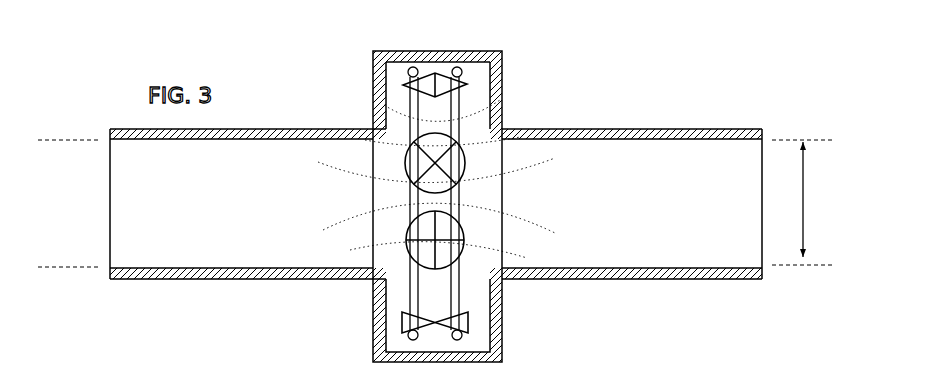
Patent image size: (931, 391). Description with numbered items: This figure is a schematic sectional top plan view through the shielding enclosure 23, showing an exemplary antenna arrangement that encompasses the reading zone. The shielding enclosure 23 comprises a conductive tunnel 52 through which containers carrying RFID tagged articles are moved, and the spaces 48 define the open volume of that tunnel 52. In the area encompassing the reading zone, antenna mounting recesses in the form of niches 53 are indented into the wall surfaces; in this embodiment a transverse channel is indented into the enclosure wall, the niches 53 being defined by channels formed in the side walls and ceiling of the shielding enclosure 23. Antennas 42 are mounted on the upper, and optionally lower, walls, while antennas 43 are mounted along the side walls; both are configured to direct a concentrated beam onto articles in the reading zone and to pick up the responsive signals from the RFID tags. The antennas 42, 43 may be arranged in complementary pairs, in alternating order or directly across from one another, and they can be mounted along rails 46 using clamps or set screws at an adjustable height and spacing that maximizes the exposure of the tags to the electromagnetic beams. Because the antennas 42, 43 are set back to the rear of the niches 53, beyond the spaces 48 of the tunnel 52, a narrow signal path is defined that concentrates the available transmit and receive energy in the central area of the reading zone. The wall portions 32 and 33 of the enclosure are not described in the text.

The shielding enclosure 23 is at (633, 284).
The pipe wall 32 is at (731, 129).
The housing wall 33 is at (503, 97).
The antennas 42 is at (467, 155).
The antennas 43 is at (432, 70).
The rails 46 is at (409, 102).
The spaces 48 is at (803, 202).
The conductive tunnel 52 is at (228, 214).
The niches 53 is at (486, 88).